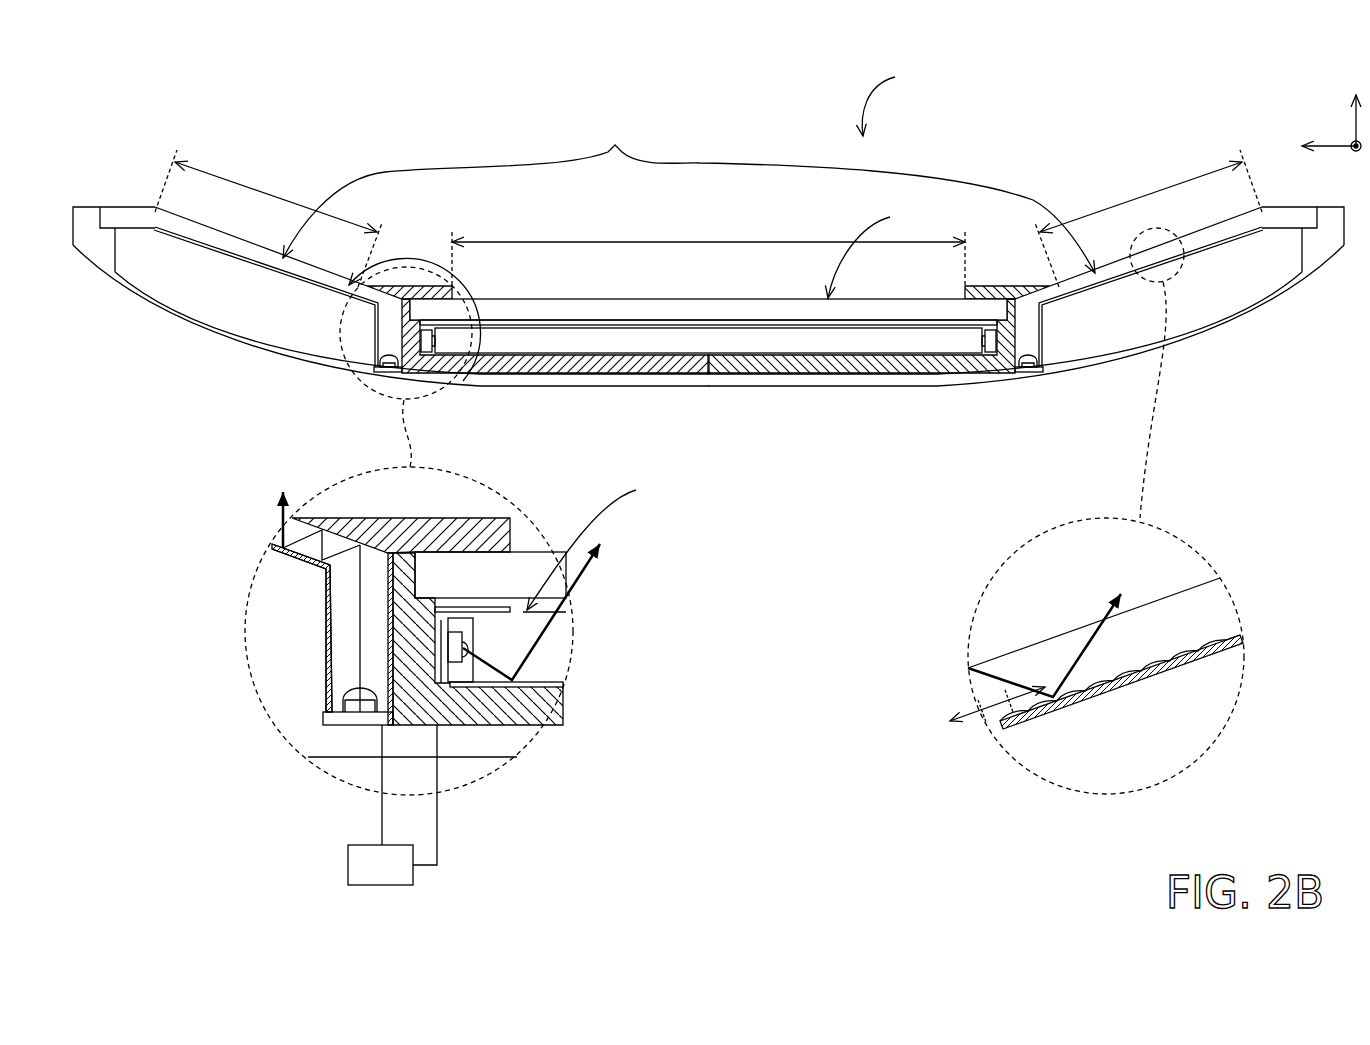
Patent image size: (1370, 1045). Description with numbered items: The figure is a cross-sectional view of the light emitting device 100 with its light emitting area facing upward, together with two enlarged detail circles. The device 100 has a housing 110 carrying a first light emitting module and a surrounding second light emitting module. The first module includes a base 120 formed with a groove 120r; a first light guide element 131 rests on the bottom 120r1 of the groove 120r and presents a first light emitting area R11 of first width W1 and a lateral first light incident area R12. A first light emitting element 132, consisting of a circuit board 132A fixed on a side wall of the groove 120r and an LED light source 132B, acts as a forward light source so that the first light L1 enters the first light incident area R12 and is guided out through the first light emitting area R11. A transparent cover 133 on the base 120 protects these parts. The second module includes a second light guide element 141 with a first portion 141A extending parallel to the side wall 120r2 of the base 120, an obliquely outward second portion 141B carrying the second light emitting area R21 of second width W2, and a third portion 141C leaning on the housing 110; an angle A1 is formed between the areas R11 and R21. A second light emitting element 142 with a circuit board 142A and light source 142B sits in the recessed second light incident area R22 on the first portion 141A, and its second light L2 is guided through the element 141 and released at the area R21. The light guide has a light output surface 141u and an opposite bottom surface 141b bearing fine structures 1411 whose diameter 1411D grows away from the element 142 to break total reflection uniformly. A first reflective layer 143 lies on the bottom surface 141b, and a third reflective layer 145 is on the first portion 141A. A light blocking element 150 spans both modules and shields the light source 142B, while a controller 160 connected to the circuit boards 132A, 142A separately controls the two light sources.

The light emitting device 100 is at (900, 99).
The housing 110 is at (1114, 387).
The base 120 is at (623, 368).
The groove 120r is at (506, 600).
The bottom of the groove 120r1 is at (547, 669).
The side wall of the base 120r2 is at (440, 620).
The first light guide element 131 is at (762, 346).
The first light emitting element 132 is at (708, 341).
The circuit board 132A is at (450, 665).
The light source 132B is at (441, 684).
The transparent cover 133 is at (687, 313).
The second light guide element 141 is at (292, 405).
The first portion 141A is at (385, 327).
The second portion 141B is at (227, 245).
The third portion 141C is at (135, 220).
The light output surface 141u is at (276, 538).
The bottom surface 141b is at (1187, 663).
The fine structures 1411 is at (1003, 720).
The diameter 1411D is at (993, 703).
The second light emitting element 142 is at (708, 363).
The circuit board 142A is at (371, 693).
The light source 142B is at (373, 726).
The first reflective layer 143 is at (277, 550).
The third reflective layer 145 is at (345, 611).
The light blocking element 150 is at (375, 518).
The controller 160 is at (392, 805).
The first light emitting area R11 is at (730, 405).
The first light incident area R12 is at (471, 622).
The second light emitting area R21 is at (689, 195).
The second light incident area R22 is at (323, 727).
The first width W1 is at (708, 249).
The second width W2 is at (708, 218).
The angle A1 is at (410, 349).
The first light L1 is at (541, 595).
The second light L2 is at (695, 580).